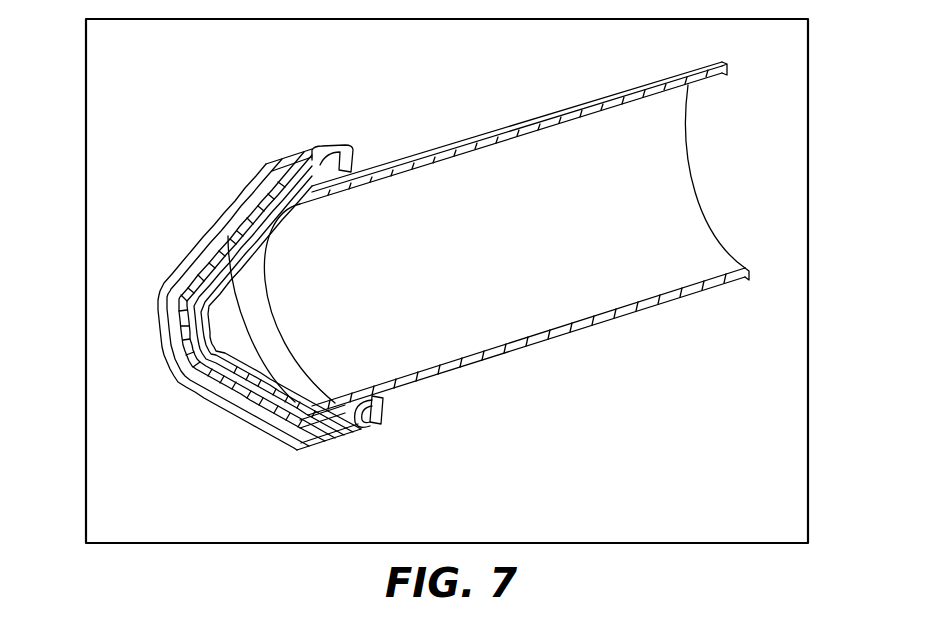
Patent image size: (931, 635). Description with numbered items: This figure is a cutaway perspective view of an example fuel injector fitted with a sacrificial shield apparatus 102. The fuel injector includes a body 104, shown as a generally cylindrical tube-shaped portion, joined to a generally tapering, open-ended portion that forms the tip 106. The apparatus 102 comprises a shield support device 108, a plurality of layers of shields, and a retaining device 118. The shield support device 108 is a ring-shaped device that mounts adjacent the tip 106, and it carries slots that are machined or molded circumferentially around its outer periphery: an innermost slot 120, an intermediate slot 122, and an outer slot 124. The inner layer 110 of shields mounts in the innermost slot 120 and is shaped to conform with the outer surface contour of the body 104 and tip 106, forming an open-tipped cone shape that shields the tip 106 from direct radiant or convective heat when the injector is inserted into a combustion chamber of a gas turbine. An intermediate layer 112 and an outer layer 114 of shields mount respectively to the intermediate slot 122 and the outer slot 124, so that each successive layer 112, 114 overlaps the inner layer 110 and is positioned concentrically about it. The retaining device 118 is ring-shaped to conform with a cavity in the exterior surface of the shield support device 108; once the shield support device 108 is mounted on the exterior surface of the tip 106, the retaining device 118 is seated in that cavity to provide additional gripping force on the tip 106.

The apparatus 102 is at (365, 325).
The body 104 is at (340, 313).
The tip 106 is at (203, 313).
The shield support device 108 is at (362, 410).
The inner layer 110 is at (195, 390).
The intermediate layer 112 is at (185, 367).
The outer layer 114 is at (163, 313).
The retaining device 118 is at (382, 413).
The innermost slot 120 is at (358, 428).
The intermediate slot 122 is at (313, 442).
The outer slot 124 is at (337, 415).